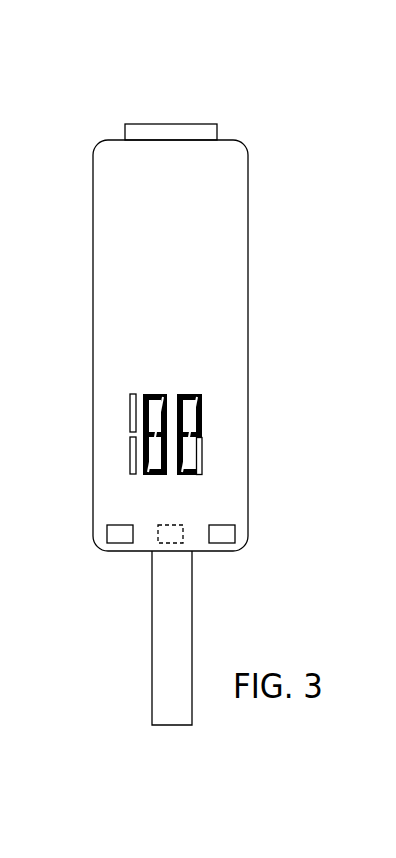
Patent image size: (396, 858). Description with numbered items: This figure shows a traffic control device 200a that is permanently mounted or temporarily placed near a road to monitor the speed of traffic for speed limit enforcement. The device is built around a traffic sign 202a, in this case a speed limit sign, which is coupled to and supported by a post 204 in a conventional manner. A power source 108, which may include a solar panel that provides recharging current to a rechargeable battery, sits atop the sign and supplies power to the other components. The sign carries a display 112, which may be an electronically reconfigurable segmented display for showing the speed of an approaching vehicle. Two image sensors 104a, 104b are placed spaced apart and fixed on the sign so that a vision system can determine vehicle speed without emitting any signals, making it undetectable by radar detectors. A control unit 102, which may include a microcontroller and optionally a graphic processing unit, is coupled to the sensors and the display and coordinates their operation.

The traffic control device 200a is at (283, 166).
The traffic sign 202a is at (112, 157).
The power source 108 is at (193, 136).
The display 112 is at (207, 466).
The image sensor 104a is at (235, 536).
The image sensor 104b is at (107, 537).
The control unit 102 is at (175, 540).
The post 204 is at (158, 583).